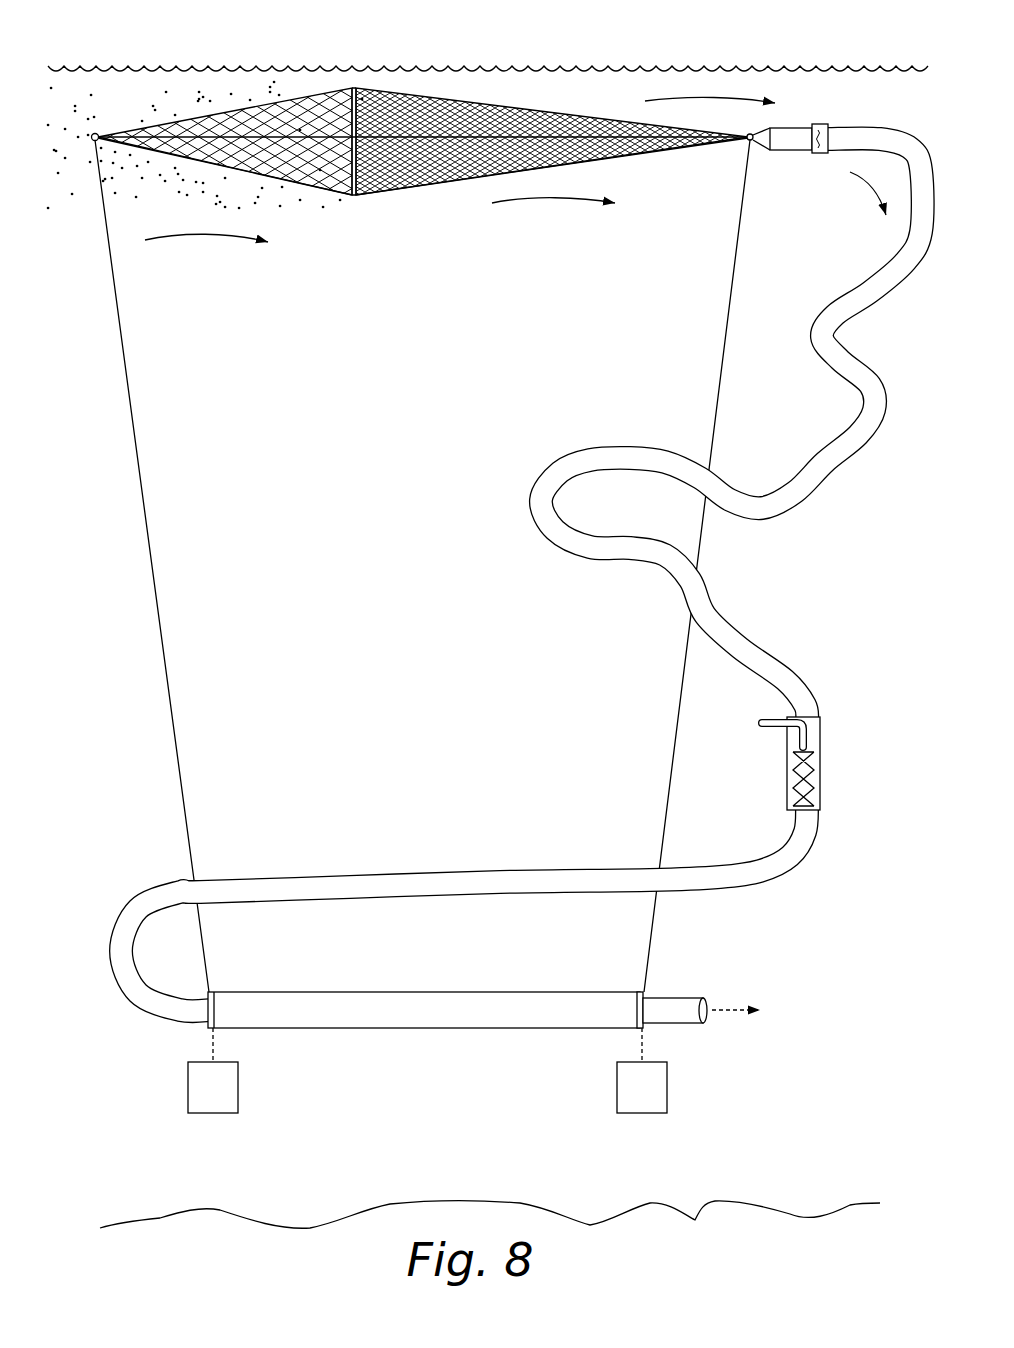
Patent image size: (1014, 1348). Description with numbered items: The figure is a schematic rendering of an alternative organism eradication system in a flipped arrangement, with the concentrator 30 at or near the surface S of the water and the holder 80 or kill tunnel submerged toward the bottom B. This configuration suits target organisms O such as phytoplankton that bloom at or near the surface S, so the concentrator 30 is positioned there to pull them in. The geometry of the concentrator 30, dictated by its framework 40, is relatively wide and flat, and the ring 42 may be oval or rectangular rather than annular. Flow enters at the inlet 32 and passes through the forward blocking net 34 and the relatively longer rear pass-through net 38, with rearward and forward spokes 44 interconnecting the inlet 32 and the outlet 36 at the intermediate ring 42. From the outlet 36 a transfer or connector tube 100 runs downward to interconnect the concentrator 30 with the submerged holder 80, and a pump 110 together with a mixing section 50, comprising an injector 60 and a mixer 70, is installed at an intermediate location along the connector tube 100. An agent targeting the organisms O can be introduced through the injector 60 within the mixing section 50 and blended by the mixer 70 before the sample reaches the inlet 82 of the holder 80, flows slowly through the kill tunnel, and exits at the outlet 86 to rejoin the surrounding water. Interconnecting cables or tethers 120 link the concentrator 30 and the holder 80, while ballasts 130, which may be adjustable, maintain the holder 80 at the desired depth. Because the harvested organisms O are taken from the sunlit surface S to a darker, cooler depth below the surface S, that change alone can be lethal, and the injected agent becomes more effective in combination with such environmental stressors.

The concentrator 30 is at (463, 171).
The inlet 32 is at (191, 113).
The forward blocking net 34 is at (245, 105).
The outlet 36 is at (766, 178).
The rear pass-through net 38 is at (520, 100).
The framework 40 is at (348, 228).
The ring 42 is at (357, 197).
The spokes 44 is at (287, 142).
The mixing section 50 is at (846, 759).
The injector 60 is at (812, 737).
The mixer 70 is at (814, 790).
The holder 80 is at (440, 1028).
The inlet 82 is at (160, 1040).
The outlet 86 is at (690, 976).
The connector tube 100 is at (585, 450).
The pump 110 is at (822, 126).
The tethers 120 is at (152, 537).
The ballasts 130 is at (240, 1100).
The surface S is at (688, 70).
The target organisms O is at (100, 127).
The bottom B is at (168, 1222).